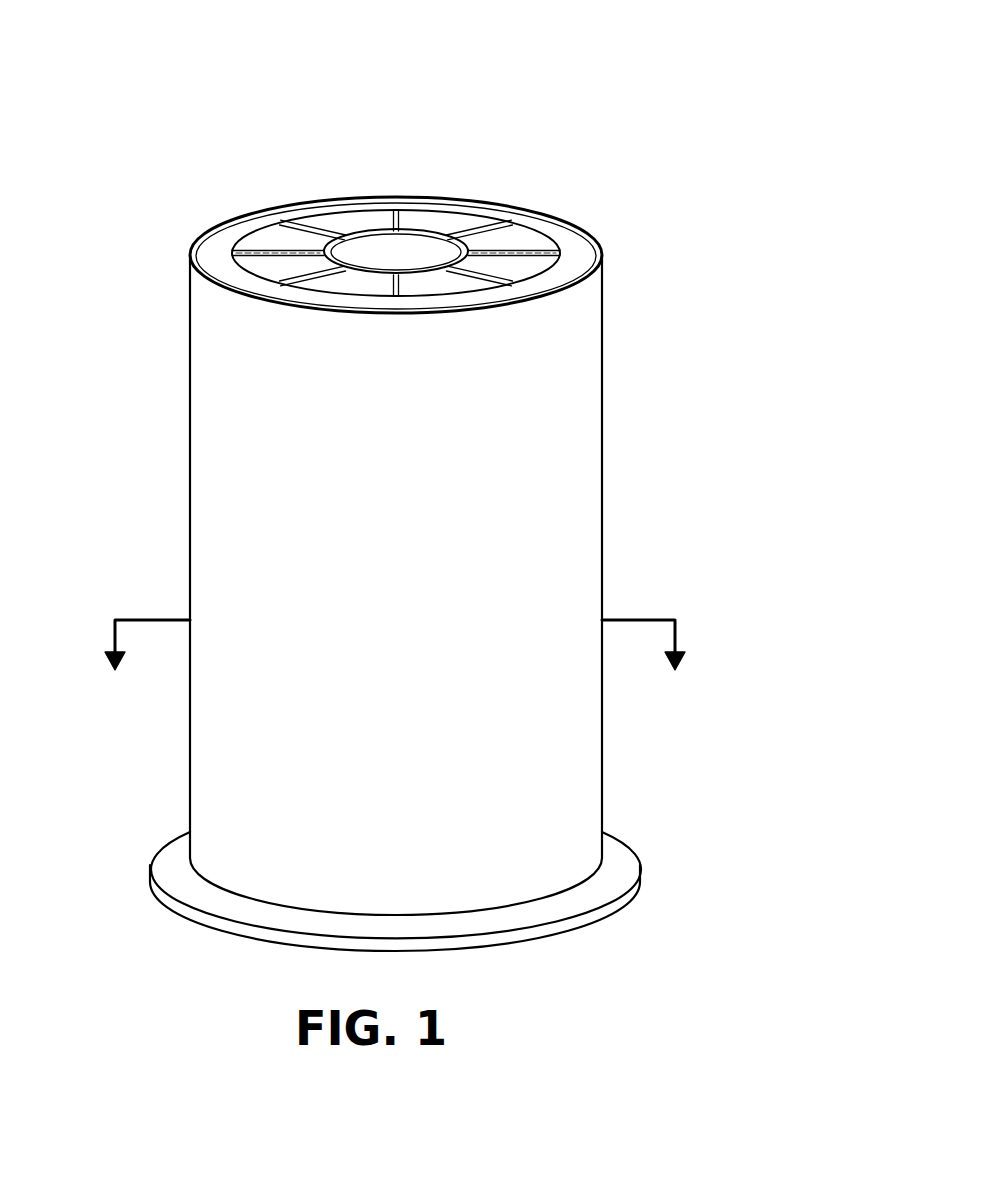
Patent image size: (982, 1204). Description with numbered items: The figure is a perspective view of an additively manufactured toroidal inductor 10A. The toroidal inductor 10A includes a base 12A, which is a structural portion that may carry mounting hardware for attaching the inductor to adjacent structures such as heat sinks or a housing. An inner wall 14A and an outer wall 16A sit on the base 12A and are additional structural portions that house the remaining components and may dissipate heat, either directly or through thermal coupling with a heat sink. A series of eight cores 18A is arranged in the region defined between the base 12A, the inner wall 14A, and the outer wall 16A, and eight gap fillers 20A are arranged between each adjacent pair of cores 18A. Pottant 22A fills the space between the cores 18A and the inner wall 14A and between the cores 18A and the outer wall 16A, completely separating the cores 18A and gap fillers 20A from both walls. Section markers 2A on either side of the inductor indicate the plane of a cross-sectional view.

The toroidal inductor 10A is at (714, 130).
The base 12A is at (613, 870).
The inner wall 14A is at (428, 240).
The outer wall 16A is at (601, 253).
The core 18A is at (510, 265).
The gap filler 20A is at (273, 255).
The pottant 22A is at (225, 237).
The section line 2A- 2A is at (391, 645).